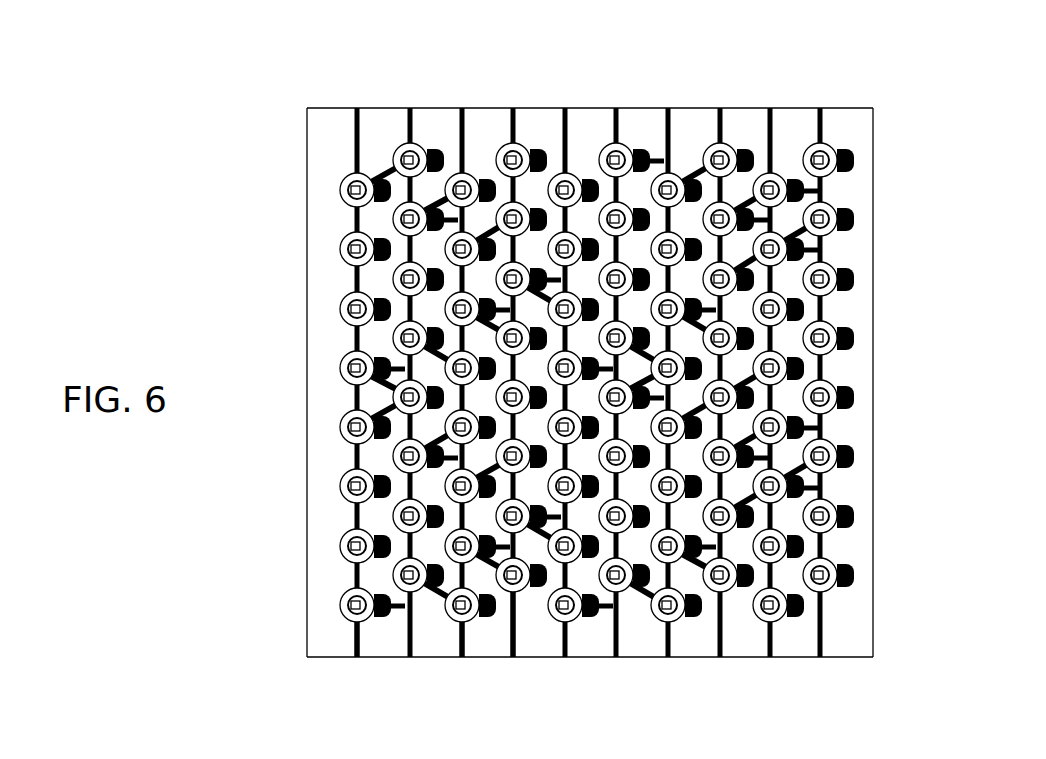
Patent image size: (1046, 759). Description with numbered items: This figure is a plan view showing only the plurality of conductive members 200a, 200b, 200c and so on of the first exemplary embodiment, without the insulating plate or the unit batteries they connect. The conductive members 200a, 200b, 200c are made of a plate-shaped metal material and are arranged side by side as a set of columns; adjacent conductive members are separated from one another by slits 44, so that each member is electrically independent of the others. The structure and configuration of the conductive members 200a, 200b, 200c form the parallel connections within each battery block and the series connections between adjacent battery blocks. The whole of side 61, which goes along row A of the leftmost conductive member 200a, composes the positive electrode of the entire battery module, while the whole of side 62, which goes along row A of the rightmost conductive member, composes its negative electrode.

The conductive member 200a is at (347, 108).
The conductive member 200b is at (432, 108).
The conductive member 200c is at (494, 108).
The side 61 is at (307, 403).
The side 62 is at (873, 403).
The slit 44 is at (513, 660).